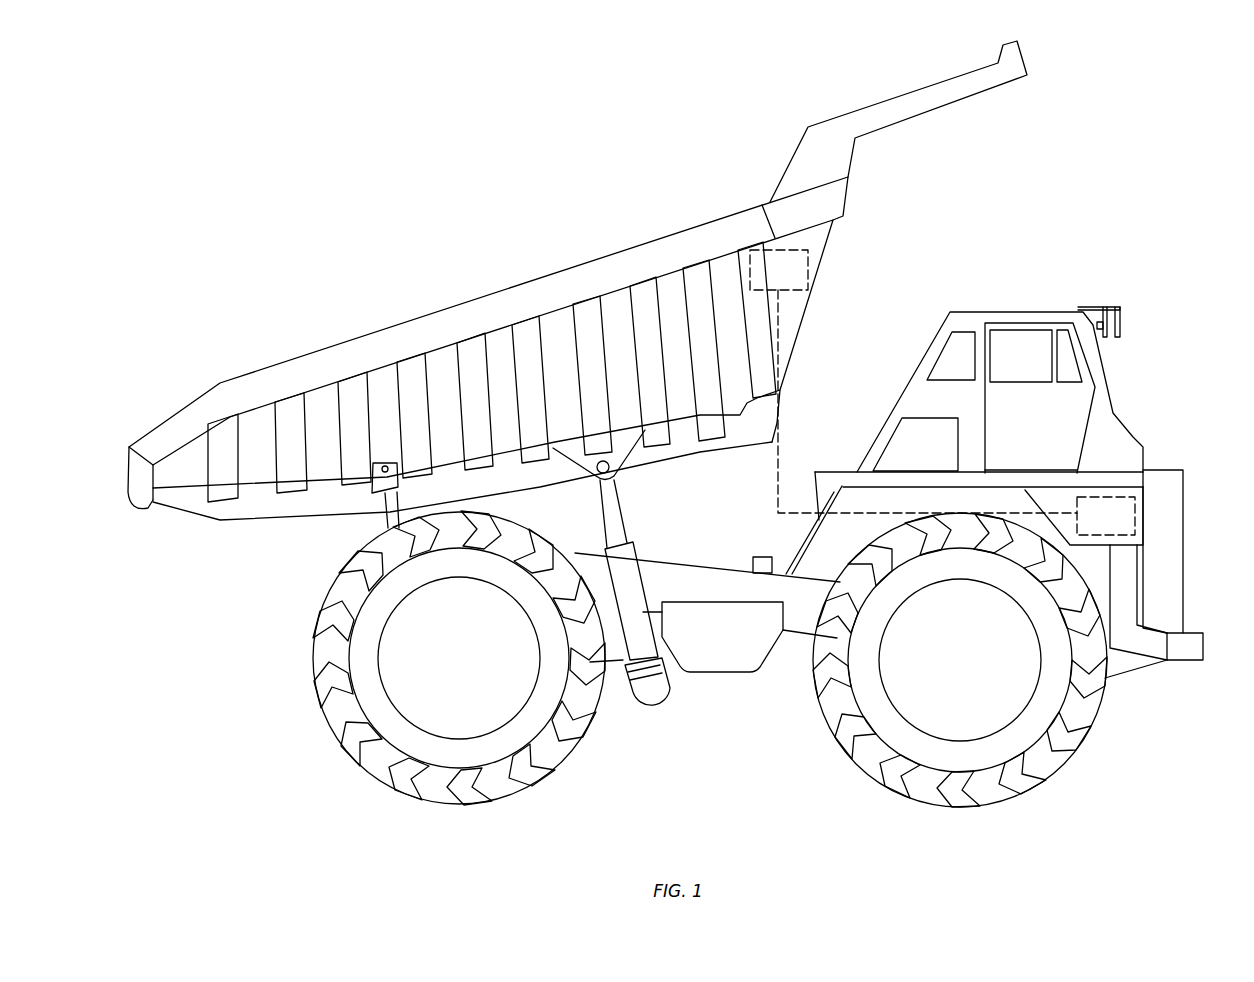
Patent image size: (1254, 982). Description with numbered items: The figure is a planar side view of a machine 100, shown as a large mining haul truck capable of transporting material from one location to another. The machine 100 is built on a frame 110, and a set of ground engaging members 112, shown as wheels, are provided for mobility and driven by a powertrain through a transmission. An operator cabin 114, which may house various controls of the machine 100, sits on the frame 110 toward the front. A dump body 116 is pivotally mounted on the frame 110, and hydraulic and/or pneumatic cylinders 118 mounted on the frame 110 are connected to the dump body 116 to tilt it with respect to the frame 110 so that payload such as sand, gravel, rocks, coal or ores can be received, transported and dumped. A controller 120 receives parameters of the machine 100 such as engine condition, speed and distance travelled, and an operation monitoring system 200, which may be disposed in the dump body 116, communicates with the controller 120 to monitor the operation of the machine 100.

The machine 100 is at (1153, 168).
The frame 110 is at (710, 587).
The ground engaging members 112 is at (406, 775).
The operator cabin 114 is at (1014, 310).
The dump body 116 is at (182, 405).
The hydraulic and/or pneumatic cylinders 118 is at (630, 626).
The controller 120 is at (1092, 527).
The operation monitoring system 200 is at (765, 281).